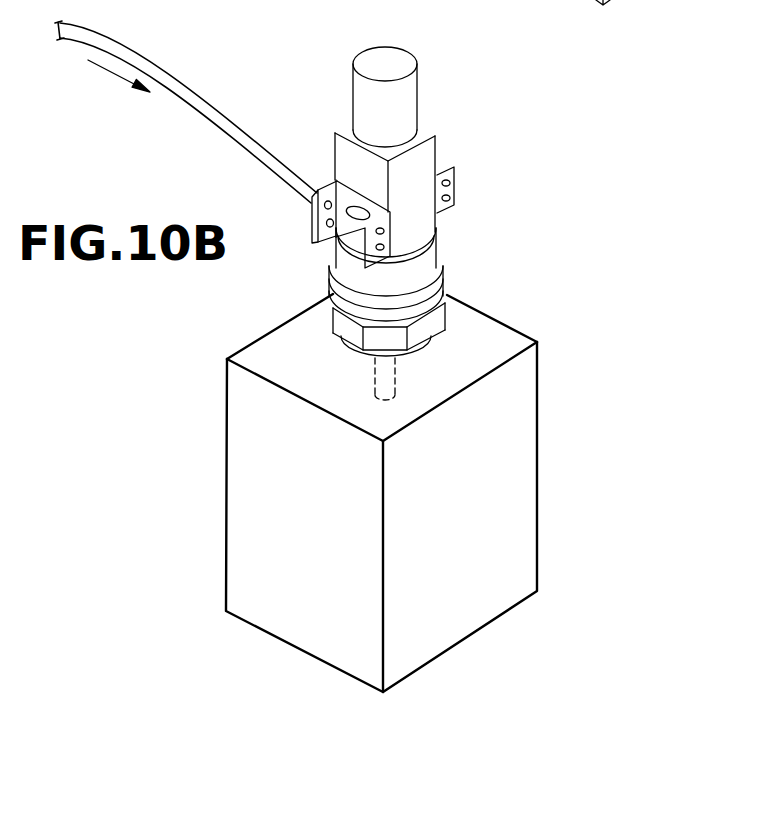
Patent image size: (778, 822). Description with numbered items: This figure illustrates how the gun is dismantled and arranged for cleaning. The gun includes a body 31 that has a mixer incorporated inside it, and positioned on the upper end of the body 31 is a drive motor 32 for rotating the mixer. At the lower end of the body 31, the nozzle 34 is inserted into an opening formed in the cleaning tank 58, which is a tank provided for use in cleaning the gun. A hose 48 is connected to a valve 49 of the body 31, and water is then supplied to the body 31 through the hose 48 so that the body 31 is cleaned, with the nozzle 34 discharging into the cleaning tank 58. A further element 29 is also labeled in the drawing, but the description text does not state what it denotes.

The supply hose 29 is at (296, 0).
The body 31 is at (423, 210).
The drive motor 32 is at (397, 63).
The nozzle 34 is at (396, 378).
The hose 48 is at (190, 97).
The valve 49 is at (322, 198).
The cleaning tank 58 is at (513, 482).